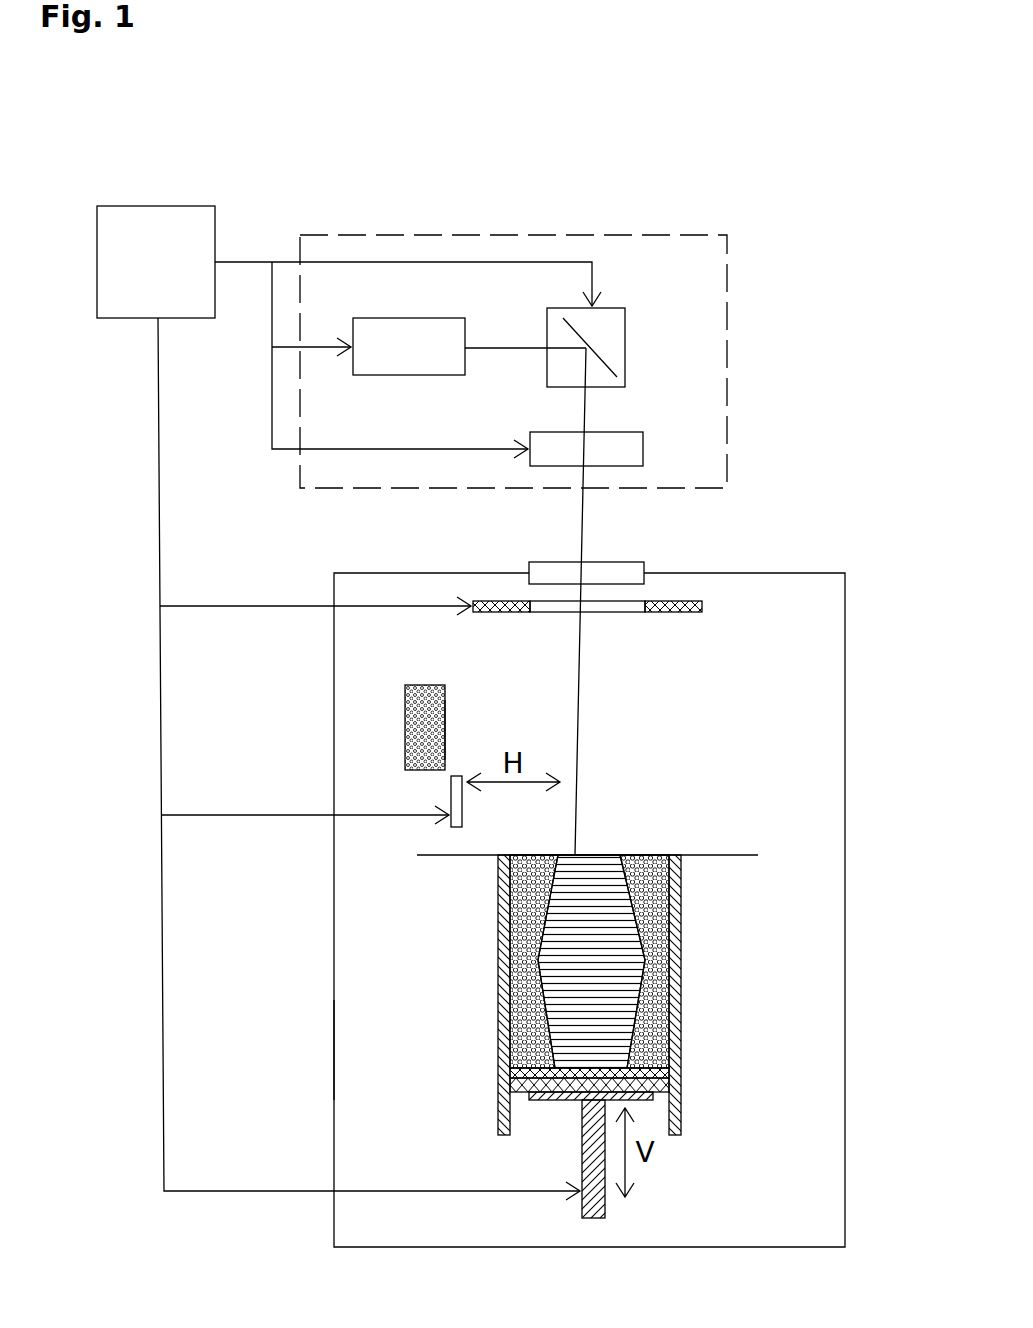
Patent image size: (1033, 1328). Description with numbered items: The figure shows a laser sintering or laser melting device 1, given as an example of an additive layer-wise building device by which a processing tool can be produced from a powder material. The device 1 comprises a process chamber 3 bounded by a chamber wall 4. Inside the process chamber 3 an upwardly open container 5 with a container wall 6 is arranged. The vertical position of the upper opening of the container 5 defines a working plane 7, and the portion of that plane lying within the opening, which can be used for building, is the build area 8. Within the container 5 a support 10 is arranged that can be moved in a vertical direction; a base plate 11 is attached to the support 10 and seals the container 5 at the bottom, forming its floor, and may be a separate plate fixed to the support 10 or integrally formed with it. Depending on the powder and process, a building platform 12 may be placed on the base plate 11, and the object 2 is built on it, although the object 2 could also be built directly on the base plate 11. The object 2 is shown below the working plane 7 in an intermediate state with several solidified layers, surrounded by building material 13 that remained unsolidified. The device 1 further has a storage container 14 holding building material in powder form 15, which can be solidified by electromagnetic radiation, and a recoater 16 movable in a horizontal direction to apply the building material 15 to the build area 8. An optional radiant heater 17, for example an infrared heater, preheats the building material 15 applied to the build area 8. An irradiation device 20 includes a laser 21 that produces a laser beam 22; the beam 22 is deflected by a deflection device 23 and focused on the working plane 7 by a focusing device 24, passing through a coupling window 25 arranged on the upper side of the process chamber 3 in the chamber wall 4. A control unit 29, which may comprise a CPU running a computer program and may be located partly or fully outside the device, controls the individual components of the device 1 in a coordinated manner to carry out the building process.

The laser sintering device 1 is at (810, 235).
The object 2 is at (605, 908).
The process chamber 3 is at (762, 607).
The chamber wall 4 is at (332, 1047).
The container 5 is at (695, 1058).
The container wall 6 is at (677, 995).
The working plane 7 is at (730, 855).
The build area 8 is at (645, 855).
The support 10 is at (570, 1098).
The base plate 11 is at (530, 1093).
The building platform 12 is at (505, 1073).
The building material 13 is at (497, 895).
The storage container 14 is at (422, 683).
The building material in powder form 15 is at (445, 728).
The recoater 16 is at (455, 797).
The radiant heater 17 is at (497, 600).
The irradiation device 20 is at (727, 348).
The laser 21 is at (405, 375).
The laser beam 22 is at (487, 347).
The deflection device 23 is at (615, 320).
The focusing device 24 is at (615, 443).
The coupling window 25 is at (622, 572).
The control unit 29 is at (156, 262).